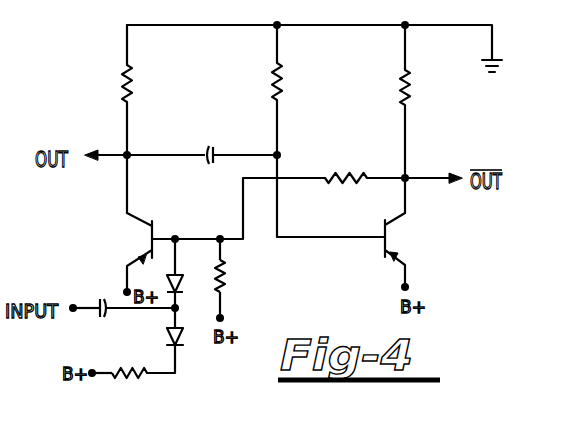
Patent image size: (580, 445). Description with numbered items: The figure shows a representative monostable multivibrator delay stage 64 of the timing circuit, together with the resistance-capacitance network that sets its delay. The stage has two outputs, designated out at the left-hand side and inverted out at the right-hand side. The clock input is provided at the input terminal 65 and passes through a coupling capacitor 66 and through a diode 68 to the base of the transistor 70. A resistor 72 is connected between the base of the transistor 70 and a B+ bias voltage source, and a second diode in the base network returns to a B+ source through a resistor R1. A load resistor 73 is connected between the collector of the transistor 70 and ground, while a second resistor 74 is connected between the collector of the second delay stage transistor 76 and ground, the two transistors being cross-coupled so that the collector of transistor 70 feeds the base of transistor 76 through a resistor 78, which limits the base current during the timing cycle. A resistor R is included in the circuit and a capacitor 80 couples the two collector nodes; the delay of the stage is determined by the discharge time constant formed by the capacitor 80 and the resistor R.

The load resistor 73 is at (133, 82).
The resistor R is at (283, 75).
The second resistor 74 is at (400, 92).
The second resistor 78 is at (370, 146).
The capacitor 80 is at (214, 150).
The transistor 70 is at (152, 233).
The diode 68 is at (179, 276).
The resistor 72 is at (228, 273).
The input terminal 65 is at (100, 297).
The coupling capacitor 66 is at (110, 316).
The resistor R1 is at (119, 393).
The second delay stage transistor 76 is at (400, 219).
The delay stage 64 is at (346, 288).